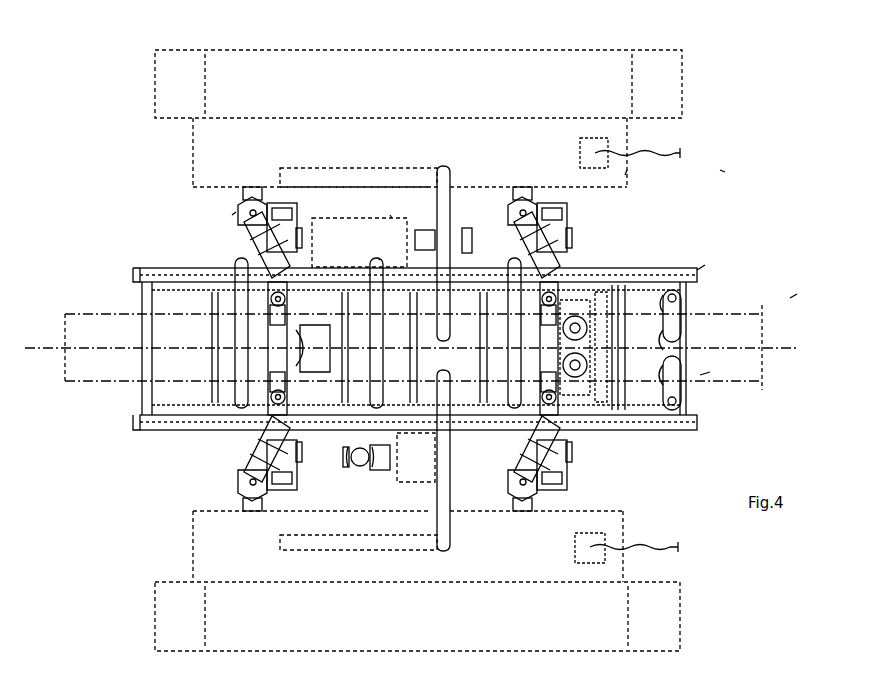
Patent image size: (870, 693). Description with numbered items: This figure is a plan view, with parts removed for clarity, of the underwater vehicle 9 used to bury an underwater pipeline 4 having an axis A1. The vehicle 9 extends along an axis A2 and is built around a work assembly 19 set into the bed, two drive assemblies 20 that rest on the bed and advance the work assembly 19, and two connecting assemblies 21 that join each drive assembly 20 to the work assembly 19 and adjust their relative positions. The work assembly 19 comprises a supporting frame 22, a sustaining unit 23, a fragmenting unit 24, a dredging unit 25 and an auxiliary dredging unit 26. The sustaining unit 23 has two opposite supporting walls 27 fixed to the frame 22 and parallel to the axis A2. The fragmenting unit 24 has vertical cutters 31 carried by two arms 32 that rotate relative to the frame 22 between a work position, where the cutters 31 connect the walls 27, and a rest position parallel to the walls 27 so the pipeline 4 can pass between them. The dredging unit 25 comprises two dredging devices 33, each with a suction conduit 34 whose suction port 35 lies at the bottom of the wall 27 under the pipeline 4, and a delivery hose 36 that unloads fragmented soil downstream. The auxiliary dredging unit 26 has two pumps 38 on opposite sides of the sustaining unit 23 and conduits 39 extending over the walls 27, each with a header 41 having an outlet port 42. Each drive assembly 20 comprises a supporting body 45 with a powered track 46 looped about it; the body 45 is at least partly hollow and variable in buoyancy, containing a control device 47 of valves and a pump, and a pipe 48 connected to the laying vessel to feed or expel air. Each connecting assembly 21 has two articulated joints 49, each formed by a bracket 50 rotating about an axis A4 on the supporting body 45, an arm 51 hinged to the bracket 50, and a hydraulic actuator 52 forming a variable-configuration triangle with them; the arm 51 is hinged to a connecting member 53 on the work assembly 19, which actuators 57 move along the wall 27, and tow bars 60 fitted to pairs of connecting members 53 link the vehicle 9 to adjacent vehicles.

The underwater pipeline 4 is at (735, 330).
The underwater vehicle 9 is at (725, 172).
The work assembly 19 is at (790, 298).
The drive assembly 20 is at (705, 82).
The connecting assembly 21 is at (650, 240).
The supporting frame 22 is at (140, 302).
The sustaining unit 23 is at (705, 265).
The fragmenting unit 24 is at (700, 375).
The dredging unit 25 is at (465, 240).
The auxiliary dredging unit 26 is at (390, 215).
The supporting wall 27 is at (135, 270).
The vertical cutter 31 is at (662, 298).
The arm 32 is at (680, 310).
The dredging device 33 is at (384, 345).
The suction conduit 34 is at (600, 300).
The suction port 35 is at (625, 300).
The delivery hose 36 is at (410, 168).
The pump 38 is at (400, 226).
The conduit 39 is at (232, 330).
The header 41 is at (232, 362).
The outlet port 42 is at (378, 258).
The supporting body 45 is at (625, 175).
The powered track 46 is at (665, 70).
The control device 47 is at (605, 140).
The pipe 48 is at (640, 168).
The articulated joint 49 is at (232, 215).
The bracket 50 is at (245, 205).
The arm 51 is at (248, 228).
The actuator 52 is at (298, 230).
The connecting member 53 is at (302, 255).
The actuator 57 is at (290, 296).
The tow bar 60 is at (172, 268).
The axis A1 is at (772, 345).
The axis A2 is at (690, 292).
The axis A4 is at (252, 185).